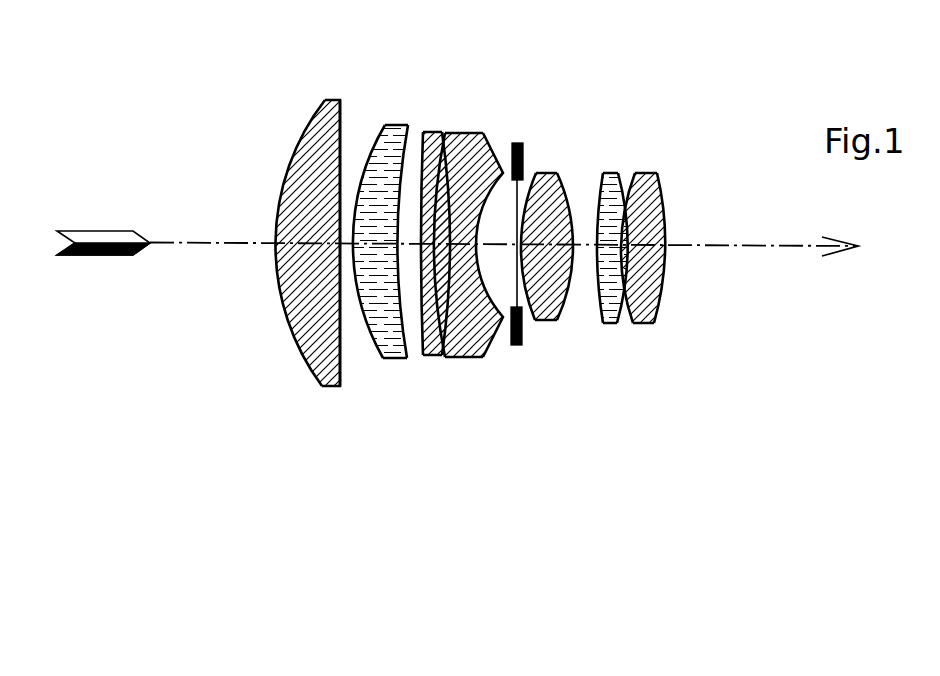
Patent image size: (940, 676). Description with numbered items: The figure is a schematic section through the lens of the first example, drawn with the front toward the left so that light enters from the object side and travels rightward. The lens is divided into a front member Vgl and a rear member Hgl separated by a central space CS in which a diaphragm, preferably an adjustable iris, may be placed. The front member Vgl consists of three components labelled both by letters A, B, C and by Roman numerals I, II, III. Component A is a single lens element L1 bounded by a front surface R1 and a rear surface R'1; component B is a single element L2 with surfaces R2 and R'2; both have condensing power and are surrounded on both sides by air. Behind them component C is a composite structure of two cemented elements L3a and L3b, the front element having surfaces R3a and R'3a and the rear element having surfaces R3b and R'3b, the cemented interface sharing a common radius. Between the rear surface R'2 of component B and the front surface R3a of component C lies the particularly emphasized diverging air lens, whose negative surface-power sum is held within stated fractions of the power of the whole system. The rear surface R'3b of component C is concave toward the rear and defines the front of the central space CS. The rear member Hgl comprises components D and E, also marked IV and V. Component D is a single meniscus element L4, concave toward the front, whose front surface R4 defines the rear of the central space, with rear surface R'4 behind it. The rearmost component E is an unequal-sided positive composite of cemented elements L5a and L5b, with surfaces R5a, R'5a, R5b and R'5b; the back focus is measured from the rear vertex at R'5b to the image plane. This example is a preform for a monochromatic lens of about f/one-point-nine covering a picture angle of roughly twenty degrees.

The front surface radius of first element R1 is at (320, 118).
The rear surface radius of first element R'1 is at (330, 205).
The front surface radius of second element R2 is at (386, 126).
The rear surface radius of second element R'2 is at (392, 189).
The front surface radius of element 3a R3a is at (422, 134).
The rear surface radius of element 3a R'3a is at (450, 190).
The front surface radius of element 3b R3b is at (459, 135).
The rear surface radius of element 3b R'3b is at (511, 211).
The front surface radius of fourth element R4 is at (534, 174).
The rear surface radius of fourth element R'4 is at (576, 218).
The front surface radius of element 5a R5a is at (603, 172).
The rear surface radius of element 5a R'5a is at (636, 217).
The front surface radius of element 5b R5b is at (634, 176).
The rear surface radius of element 5b R'5b is at (693, 243).
The central space CS is at (503, 243).
The first lens element L1 is at (329, 386).
The second lens element L2 is at (395, 358).
The front element of third component L3a is at (432, 355).
The rear element of third component L3b is at (465, 357).
The fourth lens element L4 is at (545, 322).
The front element of fifth component L5a is at (610, 323).
The rear element of fifth component L5b is at (643, 323).
The first component I is at (323, 453).
The second component II is at (395, 453).
The third component III is at (465, 451).
The fourth component IV is at (545, 412).
The fifth component V is at (647, 413).
The front component A is at (323, 508).
The second component B is at (395, 508).
The third component C is at (445, 508).
The front component of rear member D is at (545, 495).
The rearmost component E is at (630, 497).
The front member Vgl is at (272, 280).
The rear member Hgl is at (663, 293).